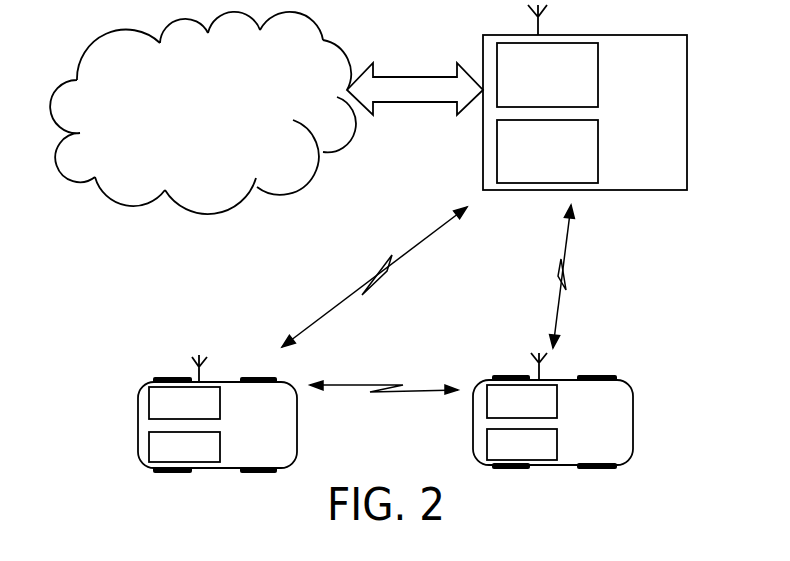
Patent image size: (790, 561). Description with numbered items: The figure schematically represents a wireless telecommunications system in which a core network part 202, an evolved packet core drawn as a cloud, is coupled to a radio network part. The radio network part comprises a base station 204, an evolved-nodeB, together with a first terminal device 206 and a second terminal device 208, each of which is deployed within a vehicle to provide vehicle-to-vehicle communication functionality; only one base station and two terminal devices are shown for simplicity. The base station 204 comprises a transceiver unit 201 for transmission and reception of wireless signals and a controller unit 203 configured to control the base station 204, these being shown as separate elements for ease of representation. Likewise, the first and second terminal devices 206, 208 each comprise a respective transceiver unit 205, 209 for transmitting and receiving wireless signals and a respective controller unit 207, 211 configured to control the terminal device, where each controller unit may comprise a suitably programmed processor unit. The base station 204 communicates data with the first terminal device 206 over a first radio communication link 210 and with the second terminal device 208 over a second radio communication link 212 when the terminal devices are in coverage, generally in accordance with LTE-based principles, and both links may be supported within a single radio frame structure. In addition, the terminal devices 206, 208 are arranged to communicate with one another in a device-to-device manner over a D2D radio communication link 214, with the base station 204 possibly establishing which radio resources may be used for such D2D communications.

The transceiver unit 201 is at (539, 102).
The core network part 202 is at (132, 102).
The controller unit 203 is at (539, 179).
The base station 204 is at (636, 172).
The transceiver unit 205 is at (162, 414).
The first terminal device 206 is at (249, 461).
The controller unit 207 is at (162, 456).
The second terminal device 208 is at (588, 459).
The transceiver unit 209 is at (500, 412).
The first radio communication link 210 is at (348, 293).
The controller unit 211 is at (500, 454).
The second radio communication link 212 is at (572, 237).
The D2D radio communication link 214 is at (358, 383).